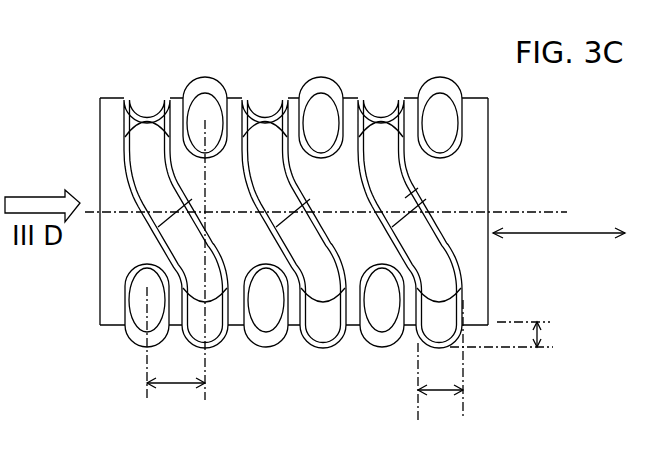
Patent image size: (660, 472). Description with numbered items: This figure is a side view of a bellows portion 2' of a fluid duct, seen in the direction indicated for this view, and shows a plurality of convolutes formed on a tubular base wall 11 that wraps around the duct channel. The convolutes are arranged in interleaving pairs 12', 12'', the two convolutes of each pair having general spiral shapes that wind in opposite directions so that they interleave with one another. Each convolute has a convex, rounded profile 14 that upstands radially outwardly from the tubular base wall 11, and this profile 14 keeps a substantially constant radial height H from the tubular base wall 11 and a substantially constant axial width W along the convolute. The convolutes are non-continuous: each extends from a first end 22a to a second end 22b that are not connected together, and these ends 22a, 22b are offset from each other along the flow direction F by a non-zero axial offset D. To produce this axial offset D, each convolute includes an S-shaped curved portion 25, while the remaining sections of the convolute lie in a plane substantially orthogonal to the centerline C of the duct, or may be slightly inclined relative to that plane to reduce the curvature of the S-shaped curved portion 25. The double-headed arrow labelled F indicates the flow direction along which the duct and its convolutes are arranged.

The knitted fabric 2' is at (9, 20).
The tubular base wall 11 is at (487, 97).
The convolute 12' is at (228, 90).
The convolute 12'' is at (145, 193).
The profile 14 is at (382, 76).
The first end 22a is at (145, 312).
The second end 22b is at (203, 117).
The S-shaped curved portion 25 is at (405, 198).
The centerline C is at (518, 212).
The axial offset D is at (176, 266).
The axial width W is at (440, 365).
The radial height H is at (504, 335).
The flow direction F is at (559, 243).